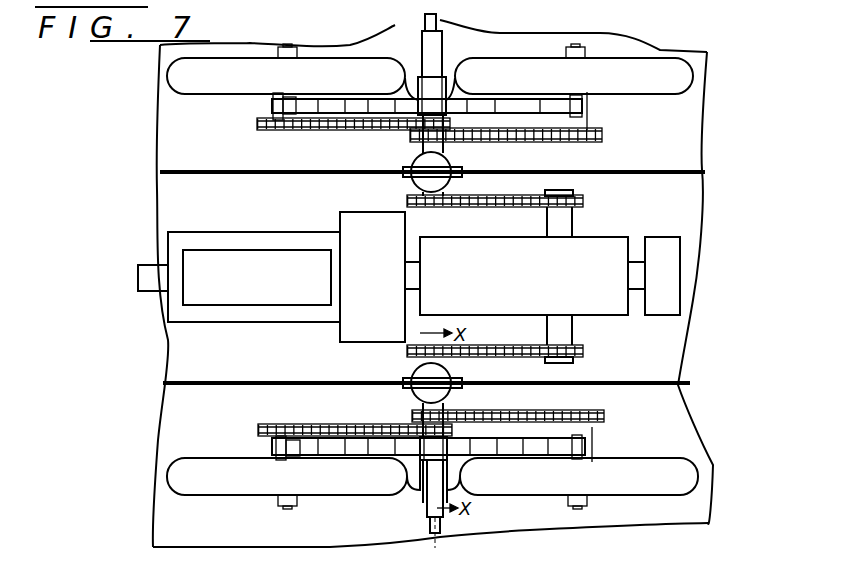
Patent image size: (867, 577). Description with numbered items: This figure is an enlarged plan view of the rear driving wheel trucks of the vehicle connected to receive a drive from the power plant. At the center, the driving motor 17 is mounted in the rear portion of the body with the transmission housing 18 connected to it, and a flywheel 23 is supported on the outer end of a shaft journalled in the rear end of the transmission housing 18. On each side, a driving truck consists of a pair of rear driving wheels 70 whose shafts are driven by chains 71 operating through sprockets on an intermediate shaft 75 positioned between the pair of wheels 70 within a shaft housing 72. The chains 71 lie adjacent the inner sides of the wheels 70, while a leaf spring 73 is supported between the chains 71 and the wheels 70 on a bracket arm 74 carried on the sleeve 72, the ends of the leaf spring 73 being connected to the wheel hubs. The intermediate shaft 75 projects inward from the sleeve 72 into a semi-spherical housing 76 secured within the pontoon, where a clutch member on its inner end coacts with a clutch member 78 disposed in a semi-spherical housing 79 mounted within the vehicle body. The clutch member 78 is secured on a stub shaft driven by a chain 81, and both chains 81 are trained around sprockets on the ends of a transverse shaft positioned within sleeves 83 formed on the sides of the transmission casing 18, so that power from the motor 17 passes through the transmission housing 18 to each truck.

The driving motor 17 is at (239, 277).
The transmission housing 18 is at (484, 277).
The flywheel 23 is at (663, 245).
The rear driving wheel 70 is at (250, 83).
The chain 71 is at (578, 137).
The shaft housing 72 is at (432, 470).
The leaf spring 73 is at (531, 136).
The bracket arm 74 is at (432, 110).
The intermediate shaft 75 is at (437, 24).
The semi-spherical housing 76 is at (424, 392).
The clutch member 78 is at (424, 158).
The semi-spherical housing 79 is at (422, 175).
The chain 81 is at (494, 208).
The sleeve 83 is at (568, 222).